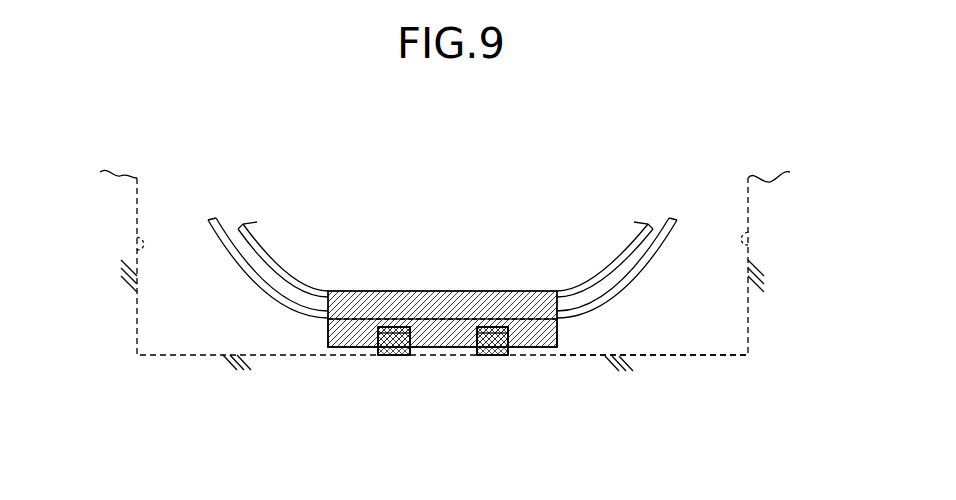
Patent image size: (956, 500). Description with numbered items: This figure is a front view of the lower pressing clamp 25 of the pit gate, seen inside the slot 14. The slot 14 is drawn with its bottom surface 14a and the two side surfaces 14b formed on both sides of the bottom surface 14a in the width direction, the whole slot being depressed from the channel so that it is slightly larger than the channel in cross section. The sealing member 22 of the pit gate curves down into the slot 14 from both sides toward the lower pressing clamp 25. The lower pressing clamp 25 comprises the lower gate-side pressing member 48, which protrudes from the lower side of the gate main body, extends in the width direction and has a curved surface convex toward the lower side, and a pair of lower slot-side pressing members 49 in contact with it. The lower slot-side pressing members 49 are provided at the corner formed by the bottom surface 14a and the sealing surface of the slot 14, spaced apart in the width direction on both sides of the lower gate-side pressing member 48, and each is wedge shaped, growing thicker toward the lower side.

The slot 14 is at (193, 345).
The bottom surface 14a is at (690, 360).
The side surfaces 14b is at (135, 237).
The sealing member 22 is at (240, 229).
The lower pressing clamp 25 is at (322, 340).
The lower gate-side pressing member 48 is at (560, 336).
The lower slot-side pressing members 49 is at (487, 357).